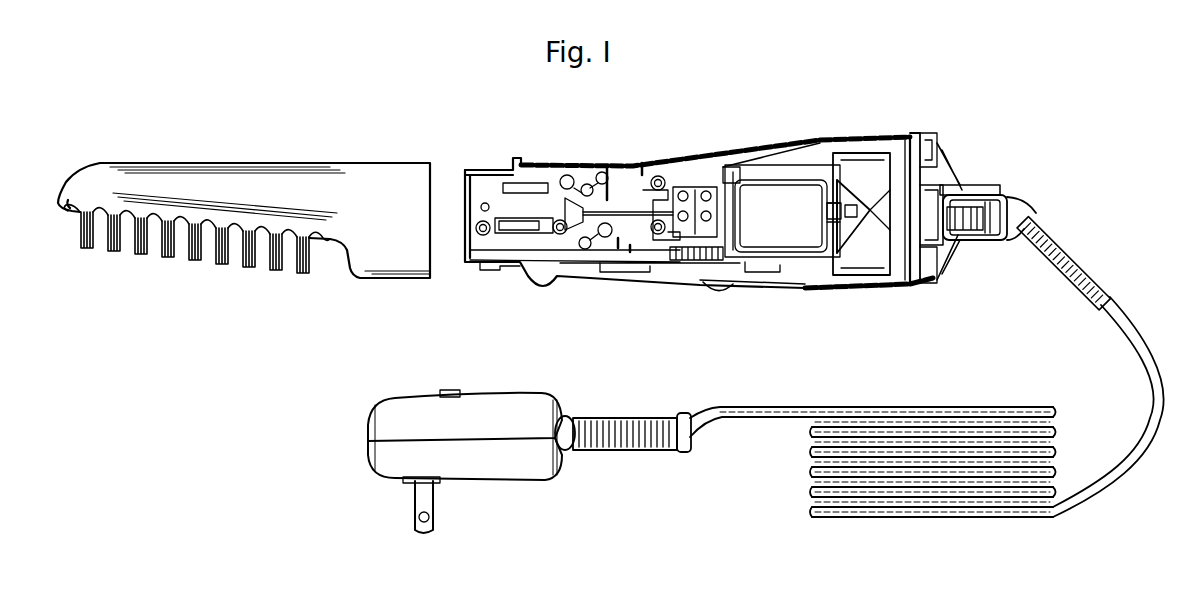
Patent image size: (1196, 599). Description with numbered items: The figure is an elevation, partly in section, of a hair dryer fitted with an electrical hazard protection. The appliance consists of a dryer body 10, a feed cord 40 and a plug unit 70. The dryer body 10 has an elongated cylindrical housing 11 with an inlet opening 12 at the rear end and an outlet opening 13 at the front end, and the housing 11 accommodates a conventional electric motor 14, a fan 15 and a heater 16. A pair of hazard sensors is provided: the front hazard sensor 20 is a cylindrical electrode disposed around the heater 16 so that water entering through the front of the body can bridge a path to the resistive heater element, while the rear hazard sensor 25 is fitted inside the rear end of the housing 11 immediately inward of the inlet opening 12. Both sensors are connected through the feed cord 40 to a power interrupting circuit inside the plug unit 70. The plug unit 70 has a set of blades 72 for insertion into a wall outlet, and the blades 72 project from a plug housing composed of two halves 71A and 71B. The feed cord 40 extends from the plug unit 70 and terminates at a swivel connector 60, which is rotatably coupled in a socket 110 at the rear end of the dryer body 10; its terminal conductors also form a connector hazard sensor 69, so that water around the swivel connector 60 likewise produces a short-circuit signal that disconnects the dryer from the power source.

The dryer body 10 is at (779, 202).
The housing 11 is at (710, 158).
The inlet opening 12 is at (955, 158).
The outlet opening 13 is at (467, 218).
The electric motor 14 is at (792, 233).
The fan 15 is at (867, 248).
The heater 16 is at (625, 193).
The front hazard sensor 20 is at (583, 165).
The rear hazard sensor 25 is at (920, 188).
The socket 110 is at (1000, 187).
The swivel connector 60 is at (968, 225).
The connector hazard sensor 69 is at (948, 225).
The feed cord 40 is at (1148, 353).
The plug unit 70 is at (503, 457).
The plug housing half 71A is at (545, 397).
The plug housing half 71B is at (555, 475).
The blades 72 is at (415, 520).